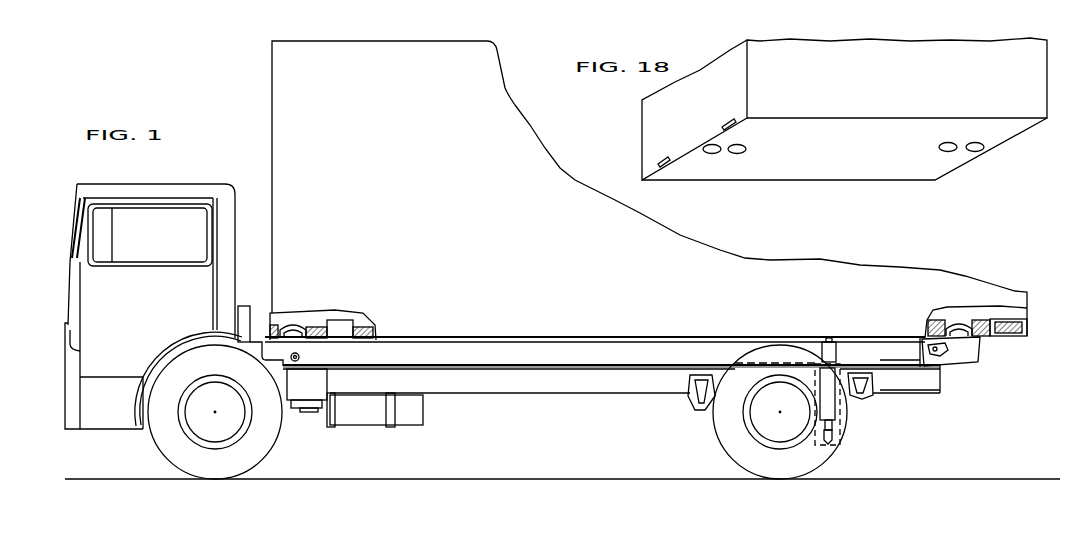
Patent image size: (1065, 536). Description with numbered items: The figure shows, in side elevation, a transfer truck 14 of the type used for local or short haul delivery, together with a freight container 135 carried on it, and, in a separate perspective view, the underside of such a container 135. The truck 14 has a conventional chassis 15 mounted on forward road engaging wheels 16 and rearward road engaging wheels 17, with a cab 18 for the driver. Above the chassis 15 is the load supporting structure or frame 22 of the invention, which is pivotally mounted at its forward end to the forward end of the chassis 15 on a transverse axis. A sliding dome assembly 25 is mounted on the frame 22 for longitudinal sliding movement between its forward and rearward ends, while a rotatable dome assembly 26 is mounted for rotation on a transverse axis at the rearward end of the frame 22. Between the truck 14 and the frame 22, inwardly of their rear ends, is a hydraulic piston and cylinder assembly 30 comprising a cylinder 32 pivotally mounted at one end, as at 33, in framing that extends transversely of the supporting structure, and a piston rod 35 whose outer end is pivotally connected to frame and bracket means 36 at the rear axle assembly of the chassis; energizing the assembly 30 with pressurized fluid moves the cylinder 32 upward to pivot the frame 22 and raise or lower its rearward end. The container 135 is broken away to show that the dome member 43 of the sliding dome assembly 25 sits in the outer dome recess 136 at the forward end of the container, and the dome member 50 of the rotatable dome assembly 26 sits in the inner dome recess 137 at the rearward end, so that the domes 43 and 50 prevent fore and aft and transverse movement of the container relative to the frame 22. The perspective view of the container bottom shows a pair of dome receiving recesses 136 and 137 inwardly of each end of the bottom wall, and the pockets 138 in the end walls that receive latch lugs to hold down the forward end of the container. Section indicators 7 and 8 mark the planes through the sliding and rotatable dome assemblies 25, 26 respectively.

In FIG. 1, the truck 14 is at (148, 483).
In FIG. 1, the chassis 15 is at (527, 387).
In FIG. 1, the forward road engaging wheels 16 is at (273, 443).
In FIG. 1, the rearward road engaging wheels 17 is at (722, 440).
In FIG. 1, the cab 18 is at (98, 300).
In FIG. 1, the load supporting structure or frame 22 is at (474, 368).
In FIG. 1, the sliding dome assembly 25 is at (300, 323).
In FIG. 1, the rotatable dome assembly 26 is at (955, 318).
In FIG. 1, the hydraulic piston and cylinder assembly 30 is at (842, 418).
In FIG. 1, the cylinder 32 is at (834, 402).
In FIG. 1, the pivotal mounting of cylinder 33 is at (818, 340).
In FIG. 1, the piston rod 35 is at (845, 440).
In FIG. 1, the frame and bracket means 36 is at (836, 452).
In FIG. 1, the dome member 43 is at (296, 322).
In FIG. 1, the dome member 50 is at (975, 345).
In FIG. 1, the freight container 135 is at (464, 225).
In FIG. 18, the freight container 135 is at (897, 78).
In FIG. 1, the outer dome receiving recess 136 is at (272, 322).
In FIG. 18, the outer dome receiving recess 136 is at (715, 153).
In FIG. 1, the inner dome receiving recess 137 is at (363, 318).
In FIG. 18, the inner dome receiving recess 137 is at (740, 153).
In FIG. 18, the pockets 138 is at (725, 126).
In FIG. 1, the section line 7 is at (315, 365).
In FIG. 1, the section line 8 is at (1000, 368).